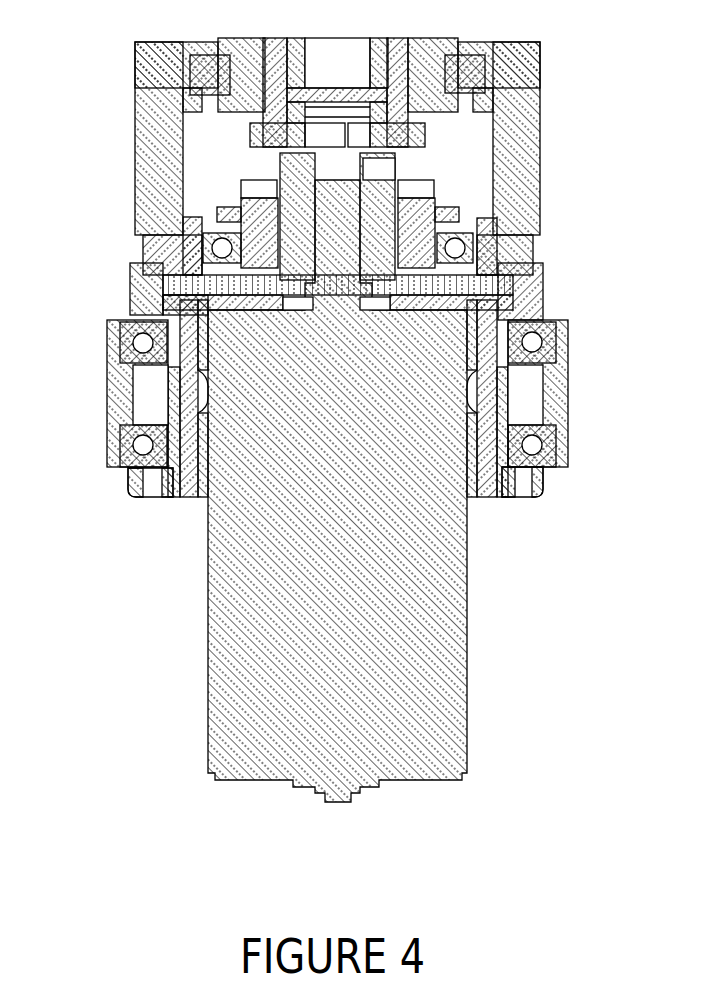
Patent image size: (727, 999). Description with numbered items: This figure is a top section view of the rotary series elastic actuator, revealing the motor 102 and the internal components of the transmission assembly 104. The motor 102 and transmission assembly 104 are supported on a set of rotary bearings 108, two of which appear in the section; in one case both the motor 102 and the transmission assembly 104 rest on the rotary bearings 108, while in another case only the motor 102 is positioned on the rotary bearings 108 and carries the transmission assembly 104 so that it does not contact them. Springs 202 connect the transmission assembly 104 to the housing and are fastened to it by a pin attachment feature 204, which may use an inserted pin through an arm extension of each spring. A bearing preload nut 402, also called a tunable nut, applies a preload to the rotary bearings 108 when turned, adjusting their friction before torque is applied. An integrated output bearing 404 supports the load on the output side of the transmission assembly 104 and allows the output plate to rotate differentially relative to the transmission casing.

The motor 102 is at (476, 608).
The transmission assembly 104 is at (440, 161).
The rotary bearings 108 is at (128, 343).
The springs 202 is at (510, 392).
The pin attachment feature 204 is at (506, 456).
The bearing preload nut 402 is at (147, 506).
The integrated output bearing 404 is at (492, 73).